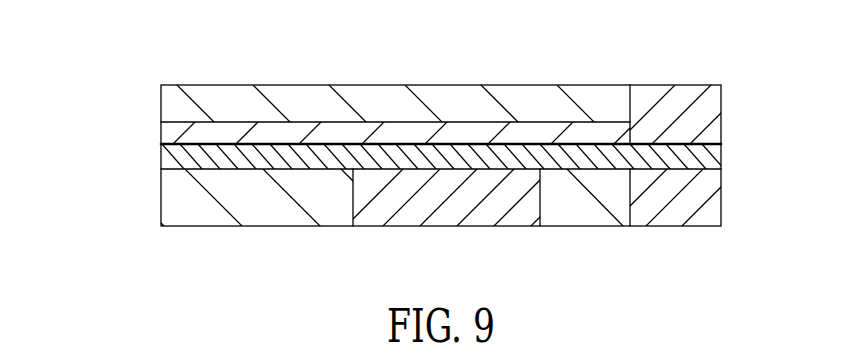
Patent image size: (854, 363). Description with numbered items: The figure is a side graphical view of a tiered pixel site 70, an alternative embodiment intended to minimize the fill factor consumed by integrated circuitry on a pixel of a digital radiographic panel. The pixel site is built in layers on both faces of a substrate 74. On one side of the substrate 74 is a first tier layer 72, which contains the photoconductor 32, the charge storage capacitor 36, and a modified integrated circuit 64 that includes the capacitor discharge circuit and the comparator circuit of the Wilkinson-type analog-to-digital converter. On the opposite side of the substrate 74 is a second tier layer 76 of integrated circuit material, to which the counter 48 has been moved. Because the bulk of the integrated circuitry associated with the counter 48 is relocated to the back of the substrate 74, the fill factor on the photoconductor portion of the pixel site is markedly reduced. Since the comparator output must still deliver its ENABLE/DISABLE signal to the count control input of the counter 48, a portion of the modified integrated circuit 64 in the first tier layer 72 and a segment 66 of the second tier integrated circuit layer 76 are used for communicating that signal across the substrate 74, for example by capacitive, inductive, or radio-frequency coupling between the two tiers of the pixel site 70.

The photoconductor 32 is at (327, 98).
The capacitor 36 is at (449, 135).
The counter 48 is at (455, 203).
The modified integrated circuit 64 is at (687, 104).
The segment of integrated circuit layer 66 is at (683, 203).
The tiered pixel site 70 is at (733, 85).
The first tier layer 72 is at (372, 77).
The substrate 74 is at (160, 158).
The second tier layer 76 is at (381, 233).